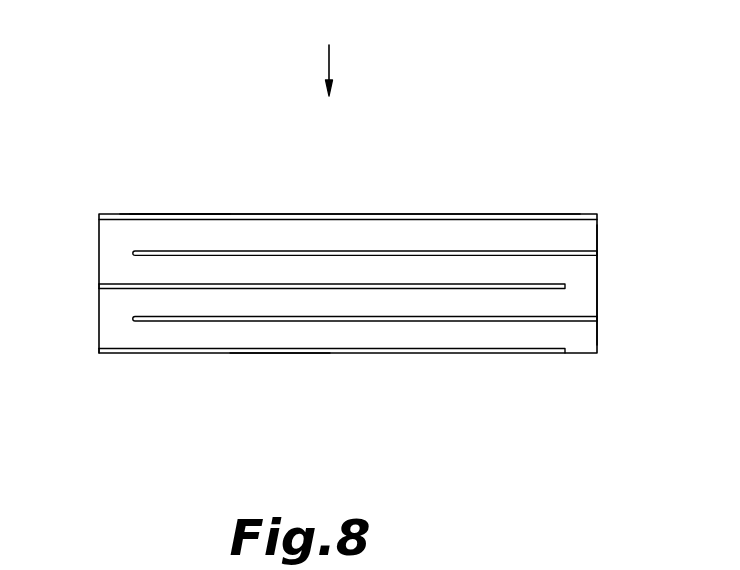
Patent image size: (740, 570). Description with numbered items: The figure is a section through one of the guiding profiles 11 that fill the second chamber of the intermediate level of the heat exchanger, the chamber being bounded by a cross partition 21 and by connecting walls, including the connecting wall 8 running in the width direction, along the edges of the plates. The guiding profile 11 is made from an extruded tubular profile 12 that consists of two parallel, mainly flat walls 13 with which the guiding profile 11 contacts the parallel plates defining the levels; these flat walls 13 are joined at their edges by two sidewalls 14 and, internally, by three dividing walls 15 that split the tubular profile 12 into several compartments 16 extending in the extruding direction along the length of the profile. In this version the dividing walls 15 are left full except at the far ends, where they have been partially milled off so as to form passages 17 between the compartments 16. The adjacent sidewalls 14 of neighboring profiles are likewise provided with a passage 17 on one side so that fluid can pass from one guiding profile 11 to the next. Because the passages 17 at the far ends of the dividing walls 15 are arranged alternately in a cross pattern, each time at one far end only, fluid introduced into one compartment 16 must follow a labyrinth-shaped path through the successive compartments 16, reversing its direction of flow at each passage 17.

The connecting wall 8 is at (105, 337).
The guiding profile 11 is at (337, 52).
The tubular profile 12 is at (247, 215).
The flat wall 13 is at (572, 238).
The sidewall 14 is at (180, 215).
The dividing wall 15 is at (365, 287).
The compartment 16 is at (478, 273).
The passage 17 is at (107, 260).
The cross partition 21 is at (370, 215).